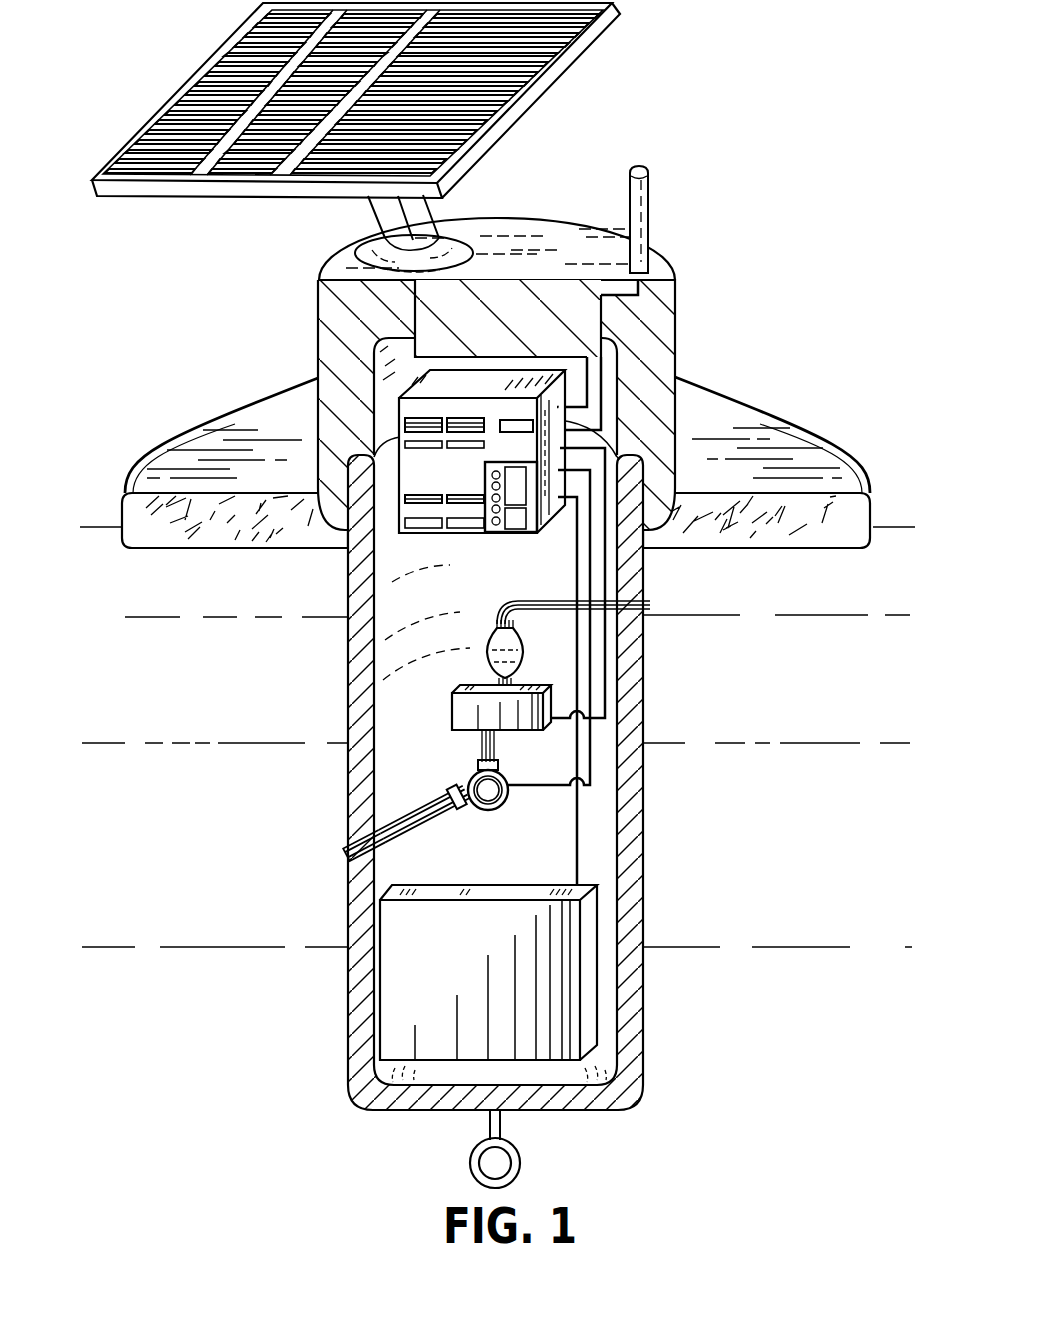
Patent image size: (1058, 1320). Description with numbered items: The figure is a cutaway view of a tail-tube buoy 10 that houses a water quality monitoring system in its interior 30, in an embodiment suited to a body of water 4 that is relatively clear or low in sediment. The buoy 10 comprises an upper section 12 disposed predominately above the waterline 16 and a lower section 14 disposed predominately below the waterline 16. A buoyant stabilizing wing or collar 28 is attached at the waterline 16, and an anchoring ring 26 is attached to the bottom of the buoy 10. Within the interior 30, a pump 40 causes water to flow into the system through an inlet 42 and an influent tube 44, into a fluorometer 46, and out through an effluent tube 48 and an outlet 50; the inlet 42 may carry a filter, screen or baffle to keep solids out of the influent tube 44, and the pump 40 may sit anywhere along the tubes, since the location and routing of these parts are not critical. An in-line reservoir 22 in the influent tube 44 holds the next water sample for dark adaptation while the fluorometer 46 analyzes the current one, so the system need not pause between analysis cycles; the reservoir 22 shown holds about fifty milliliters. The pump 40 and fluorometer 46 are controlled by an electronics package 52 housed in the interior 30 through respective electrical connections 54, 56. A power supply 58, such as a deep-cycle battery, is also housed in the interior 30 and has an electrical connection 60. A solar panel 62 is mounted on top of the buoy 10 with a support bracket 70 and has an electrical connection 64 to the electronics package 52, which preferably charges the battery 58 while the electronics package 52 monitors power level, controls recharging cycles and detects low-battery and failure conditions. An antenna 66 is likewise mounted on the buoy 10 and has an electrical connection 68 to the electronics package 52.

The body of water 4 is at (240, 687).
The tail-tube buoy 10 is at (810, 279).
The upper section 12 is at (675, 352).
The lower section 14 is at (645, 830).
The waterline 16 is at (100, 527).
The in-line reservoir 22 is at (493, 633).
The anchoring ring 26 is at (522, 1160).
The buoyant stabilizing wing or collar 28 is at (253, 392).
The interior 30 is at (405, 855).
The pump 40 is at (470, 805).
The inlet 42 is at (648, 605).
The influent tube 44 is at (560, 603).
The fluorometer 46 is at (452, 705).
The effluent tube 48 is at (407, 817).
The outlet 50 is at (345, 853).
The electronics package 52 is at (413, 382).
The electrical connection 54 is at (520, 788).
The electrical connection 56 is at (607, 703).
The power supply 58 is at (600, 955).
The electrical connection 60 is at (575, 866).
The solar panel 62 is at (180, 194).
The electrical connection 64 is at (410, 303).
The antenna 66 is at (650, 184).
The electrical connection 68 is at (640, 292).
The support bracket 70 is at (447, 213).